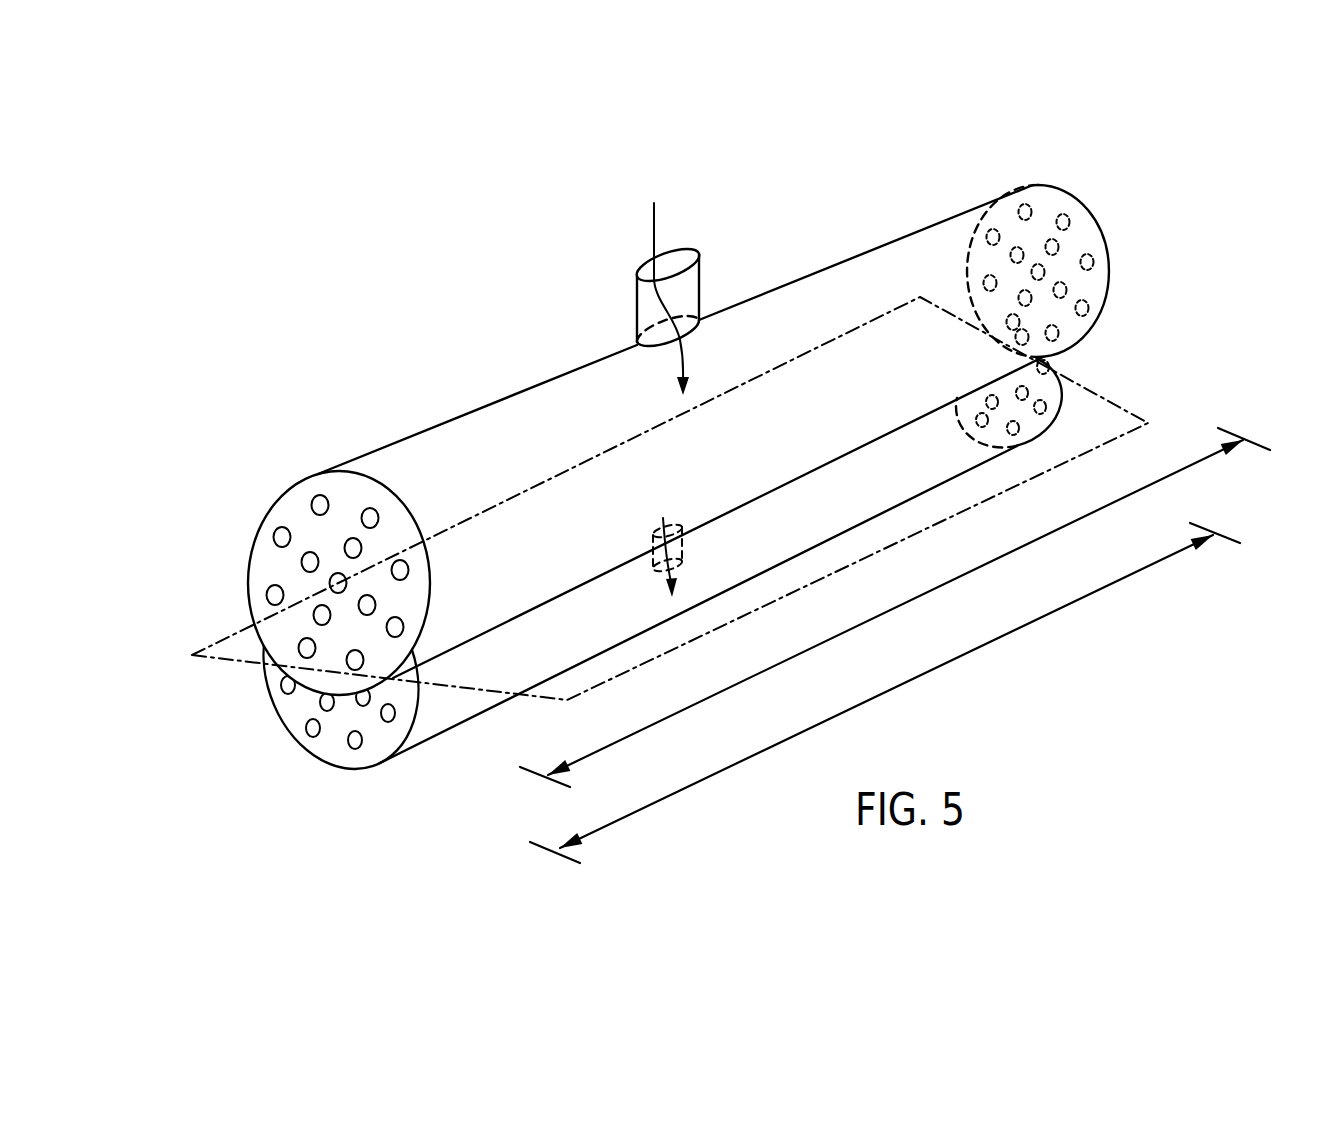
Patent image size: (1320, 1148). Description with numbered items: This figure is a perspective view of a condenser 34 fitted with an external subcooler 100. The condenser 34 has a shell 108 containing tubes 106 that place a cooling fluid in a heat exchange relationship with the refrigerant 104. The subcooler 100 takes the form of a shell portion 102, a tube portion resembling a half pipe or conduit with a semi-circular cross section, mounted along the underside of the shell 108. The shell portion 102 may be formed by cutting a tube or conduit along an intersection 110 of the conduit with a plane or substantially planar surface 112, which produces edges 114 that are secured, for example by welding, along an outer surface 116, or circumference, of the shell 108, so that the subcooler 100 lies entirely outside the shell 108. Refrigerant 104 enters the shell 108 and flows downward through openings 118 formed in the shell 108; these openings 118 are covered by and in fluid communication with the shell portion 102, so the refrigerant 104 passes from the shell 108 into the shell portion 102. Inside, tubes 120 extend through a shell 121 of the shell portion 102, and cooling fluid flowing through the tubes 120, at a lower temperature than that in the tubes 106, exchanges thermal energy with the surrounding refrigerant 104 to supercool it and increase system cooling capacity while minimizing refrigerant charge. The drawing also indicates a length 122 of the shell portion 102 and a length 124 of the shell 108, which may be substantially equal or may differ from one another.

The condenser 34 is at (897, 178).
The external subcooler 100 is at (957, 480).
The shell portion 102 is at (273, 756).
The refrigerant 104 is at (655, 240).
The tubes 106 is at (320, 505).
The shell 108 is at (438, 425).
The intersection 110 is at (237, 675).
The plane 112 is at (615, 680).
The edges 114 is at (1060, 410).
The outer surface 116 is at (548, 442).
The openings 118 is at (680, 552).
The tubes 120 is at (316, 732).
The shell 121 is at (470, 718).
The length 122 is at (885, 693).
The length 124 is at (895, 607).